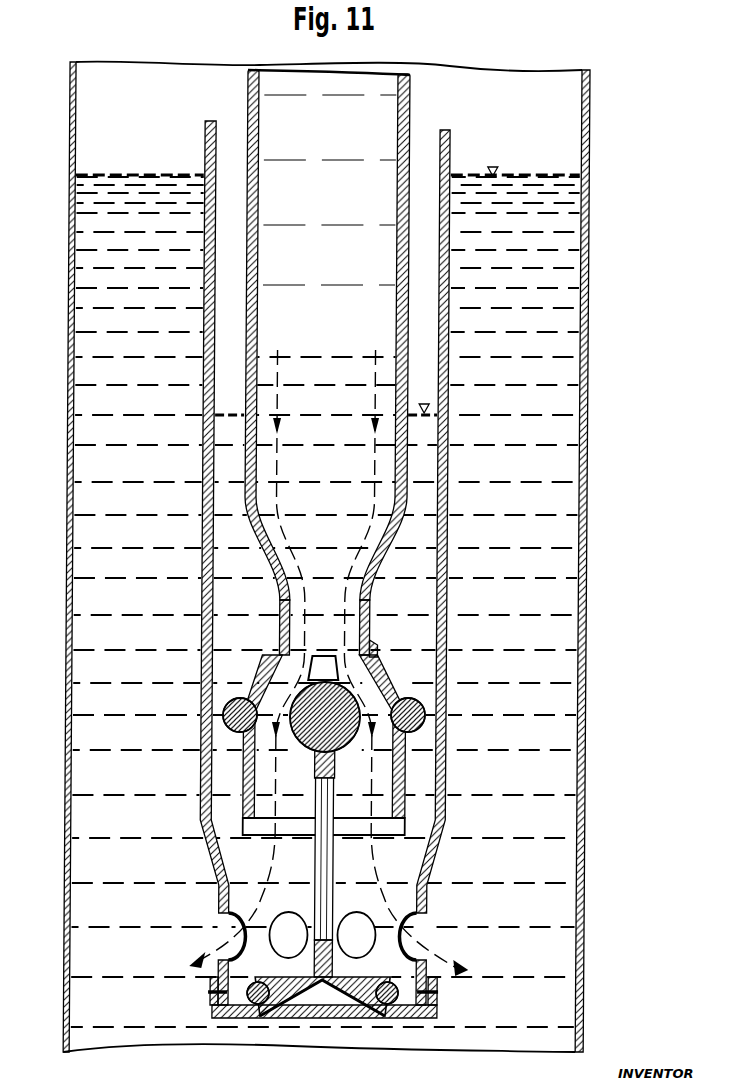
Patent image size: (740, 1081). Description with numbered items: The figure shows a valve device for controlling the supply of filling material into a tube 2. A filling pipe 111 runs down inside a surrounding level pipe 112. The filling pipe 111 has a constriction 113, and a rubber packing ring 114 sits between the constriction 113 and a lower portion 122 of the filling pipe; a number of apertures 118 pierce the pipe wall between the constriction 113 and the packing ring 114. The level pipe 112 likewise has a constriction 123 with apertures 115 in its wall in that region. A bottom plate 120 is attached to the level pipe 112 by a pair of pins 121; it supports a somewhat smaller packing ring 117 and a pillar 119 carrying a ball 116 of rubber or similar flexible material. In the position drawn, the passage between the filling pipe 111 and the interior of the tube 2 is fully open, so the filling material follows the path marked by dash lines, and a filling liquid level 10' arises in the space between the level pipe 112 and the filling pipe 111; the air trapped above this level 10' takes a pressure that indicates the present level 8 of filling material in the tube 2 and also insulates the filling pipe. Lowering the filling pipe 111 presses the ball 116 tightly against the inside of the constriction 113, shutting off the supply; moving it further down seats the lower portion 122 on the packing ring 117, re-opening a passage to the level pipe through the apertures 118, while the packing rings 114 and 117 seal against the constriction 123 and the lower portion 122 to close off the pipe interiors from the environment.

The tube 2 is at (591, 368).
The level of the filling material 8 is at (541, 176).
The filling liquid level 10' is at (199, 409).
The filling pipe 111 is at (405, 336).
The level pipe 112 is at (444, 409).
The constriction 113 is at (296, 606).
The packing ring 114 is at (430, 712).
The apertures 115 is at (362, 942).
The ball 116 is at (360, 745).
The packing ring 117 is at (445, 1000).
The apertures 118 is at (379, 662).
The pillar 119 is at (330, 865).
The bottom plate 120 is at (226, 1006).
The pins 121 is at (214, 992).
The lower portion of the filling pipe 122 is at (412, 792).
The constriction 123 is at (428, 884).